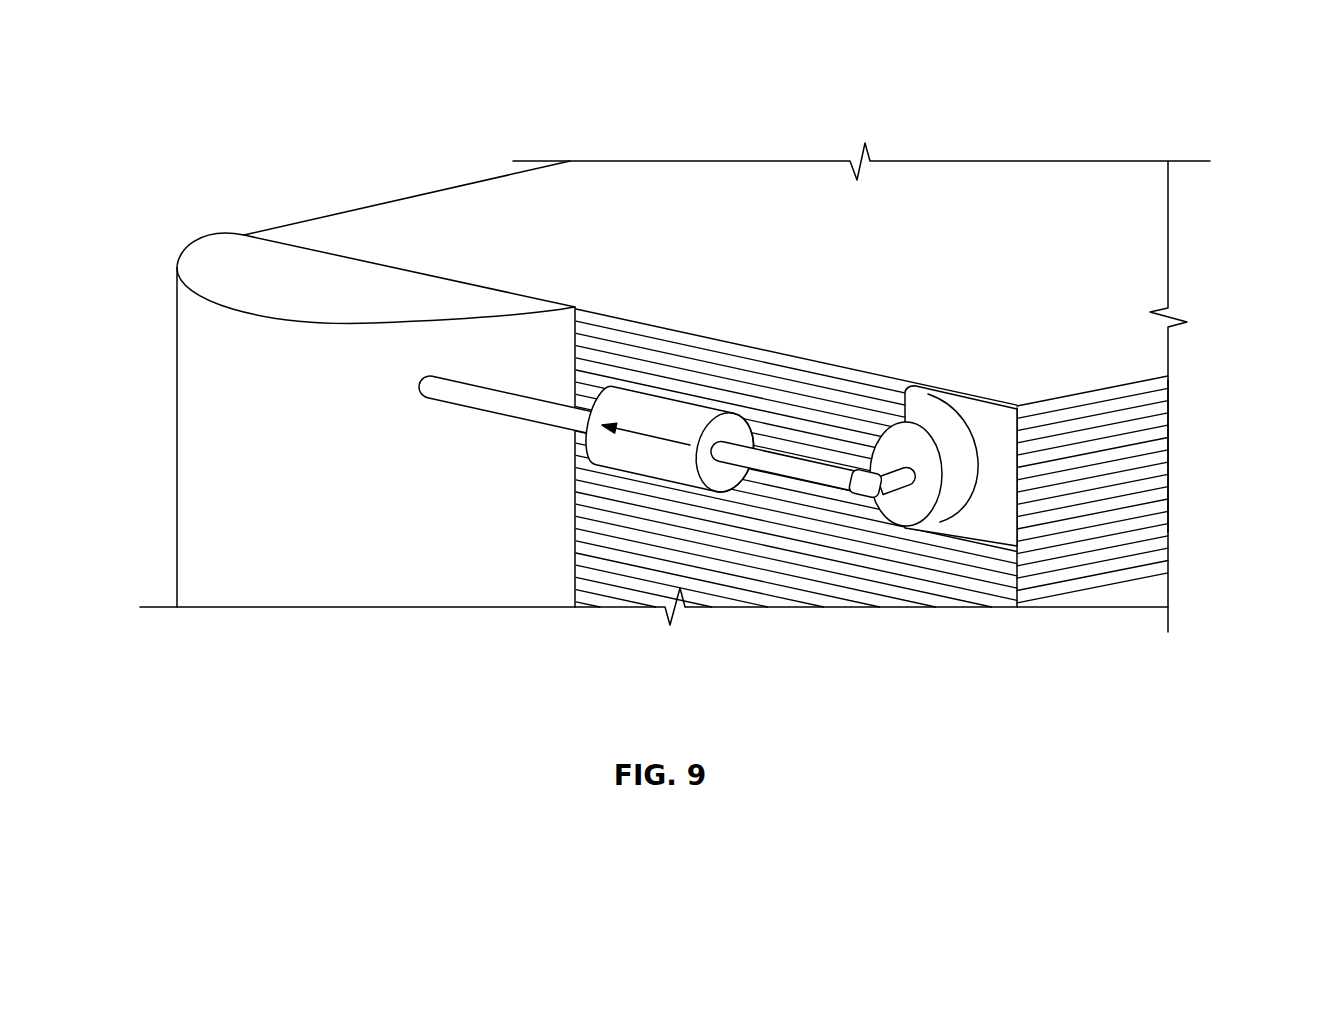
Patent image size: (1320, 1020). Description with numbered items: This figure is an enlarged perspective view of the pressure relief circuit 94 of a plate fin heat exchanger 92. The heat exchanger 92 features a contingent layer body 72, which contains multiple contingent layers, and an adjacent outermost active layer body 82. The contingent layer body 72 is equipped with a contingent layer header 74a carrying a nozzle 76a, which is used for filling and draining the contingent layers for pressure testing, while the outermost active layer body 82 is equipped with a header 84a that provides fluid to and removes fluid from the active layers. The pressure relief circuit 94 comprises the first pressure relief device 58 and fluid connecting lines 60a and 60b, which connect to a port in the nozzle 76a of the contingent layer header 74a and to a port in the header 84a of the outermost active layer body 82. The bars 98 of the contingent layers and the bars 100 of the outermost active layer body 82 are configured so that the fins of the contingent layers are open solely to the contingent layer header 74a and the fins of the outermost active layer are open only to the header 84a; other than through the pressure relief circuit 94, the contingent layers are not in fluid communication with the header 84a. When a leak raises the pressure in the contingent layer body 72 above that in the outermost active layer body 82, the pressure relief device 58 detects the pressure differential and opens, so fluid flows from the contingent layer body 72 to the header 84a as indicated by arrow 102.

The first pressure relief device 58 is at (650, 458).
The fluid connecting line 60a is at (788, 468).
The fluid connecting line 60b is at (490, 400).
The contingent layer body 72 is at (1185, 370).
The contingent layer header 74a is at (958, 527).
The nozzle 76a is at (913, 447).
The outermost active layer body 82 is at (1177, 532).
The header 84a is at (248, 270).
The plate fin heat exchanger 92 is at (772, 140).
The pressure relief circuit 94 is at (555, 452).
The bars 98 is at (1110, 417).
The bars 100 is at (1088, 538).
The arrow 102 is at (663, 438).